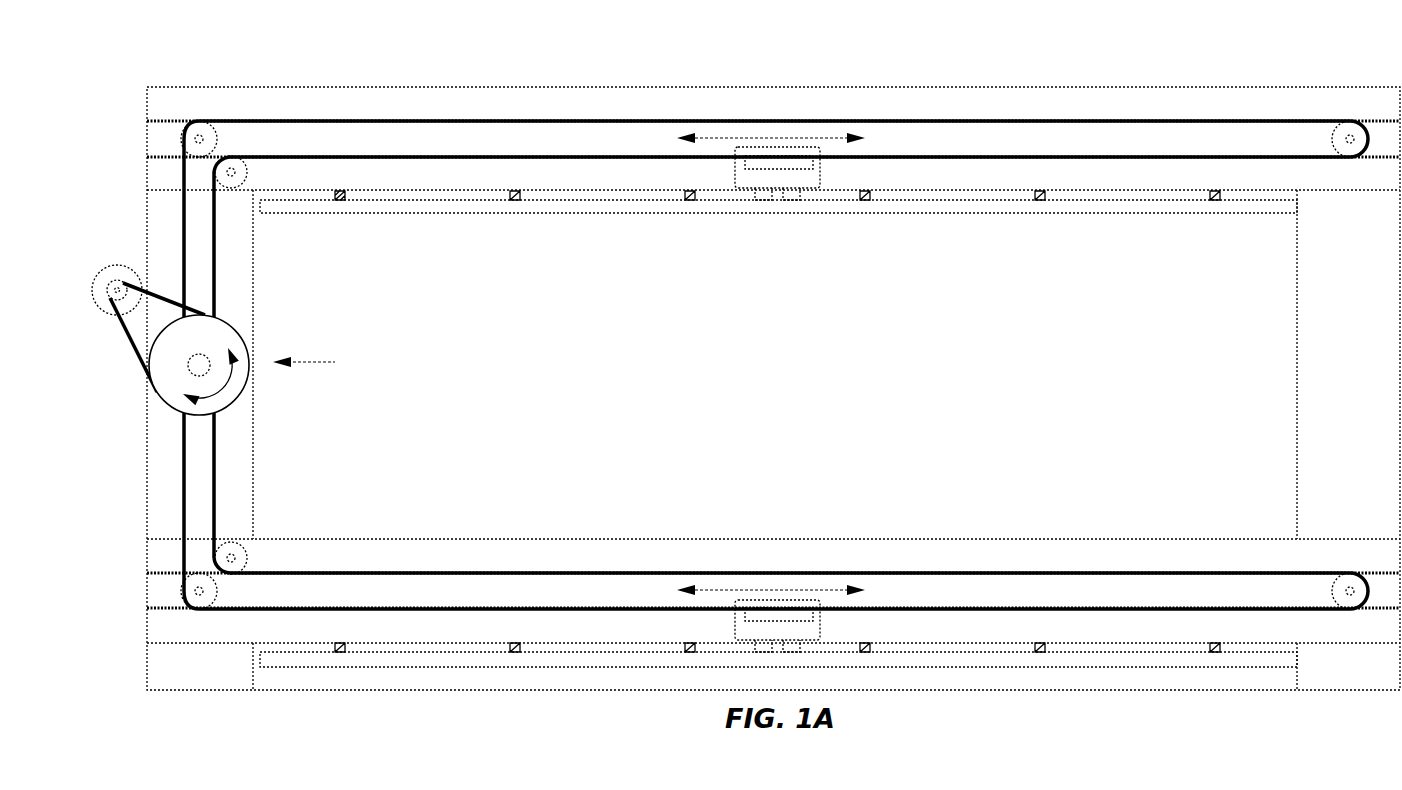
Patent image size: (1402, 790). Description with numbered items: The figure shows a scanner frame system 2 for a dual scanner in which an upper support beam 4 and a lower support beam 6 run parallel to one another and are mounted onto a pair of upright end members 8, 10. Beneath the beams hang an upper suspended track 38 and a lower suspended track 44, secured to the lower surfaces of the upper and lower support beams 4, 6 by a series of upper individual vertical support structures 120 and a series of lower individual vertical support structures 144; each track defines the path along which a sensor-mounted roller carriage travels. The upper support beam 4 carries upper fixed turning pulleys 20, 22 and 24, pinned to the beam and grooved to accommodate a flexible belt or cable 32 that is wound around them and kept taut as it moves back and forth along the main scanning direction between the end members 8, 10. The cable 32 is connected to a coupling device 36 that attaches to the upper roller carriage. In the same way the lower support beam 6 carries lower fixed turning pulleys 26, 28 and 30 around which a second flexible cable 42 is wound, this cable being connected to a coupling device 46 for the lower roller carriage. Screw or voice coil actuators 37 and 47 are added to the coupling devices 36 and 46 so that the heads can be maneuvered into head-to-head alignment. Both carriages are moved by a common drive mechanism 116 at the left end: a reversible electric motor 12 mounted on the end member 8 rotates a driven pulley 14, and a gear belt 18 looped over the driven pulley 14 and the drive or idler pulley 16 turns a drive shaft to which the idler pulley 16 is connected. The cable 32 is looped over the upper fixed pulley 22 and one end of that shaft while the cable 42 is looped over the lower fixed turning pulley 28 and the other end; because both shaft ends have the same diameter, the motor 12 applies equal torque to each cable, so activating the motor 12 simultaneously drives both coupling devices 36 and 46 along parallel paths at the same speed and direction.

The scanner frame system 2 is at (344, 58).
The upper support beam 4 is at (575, 110).
The lower support beam 6 is at (690, 552).
The upright end member 8 is at (254, 318).
The upright end member 10 is at (1303, 430).
The reversible electric motor 12 is at (108, 268).
The driven pulley 14 is at (119, 280).
The idler pulley 16 is at (238, 383).
The gear belt 18 is at (133, 343).
The upper fixed turning pulley 20 is at (1352, 128).
The upper fixed turning pulley 22 is at (205, 125).
The upper fixed turning pulley 24 is at (243, 186).
The lower fixed turning pulley 26 is at (246, 545).
The lower fixed turning pulley 28 is at (185, 577).
The lower fixed turning pulley 30 is at (1352, 575).
The flexible cable 32 is at (434, 118).
The coupling device 36 is at (810, 180).
The head-moving actuator 37 is at (795, 155).
The upper suspended track 38 is at (370, 213).
The flexible cable 42 is at (556, 573).
The lower suspended track 44 is at (367, 668).
The coupling device 46 is at (815, 630).
The head-moving actuator 47 is at (775, 605).
The common drive mechanism 116 is at (330, 362).
The upper individual vertical support structures 120 is at (1043, 202).
The lower individual vertical support structures 144 is at (1040, 648).